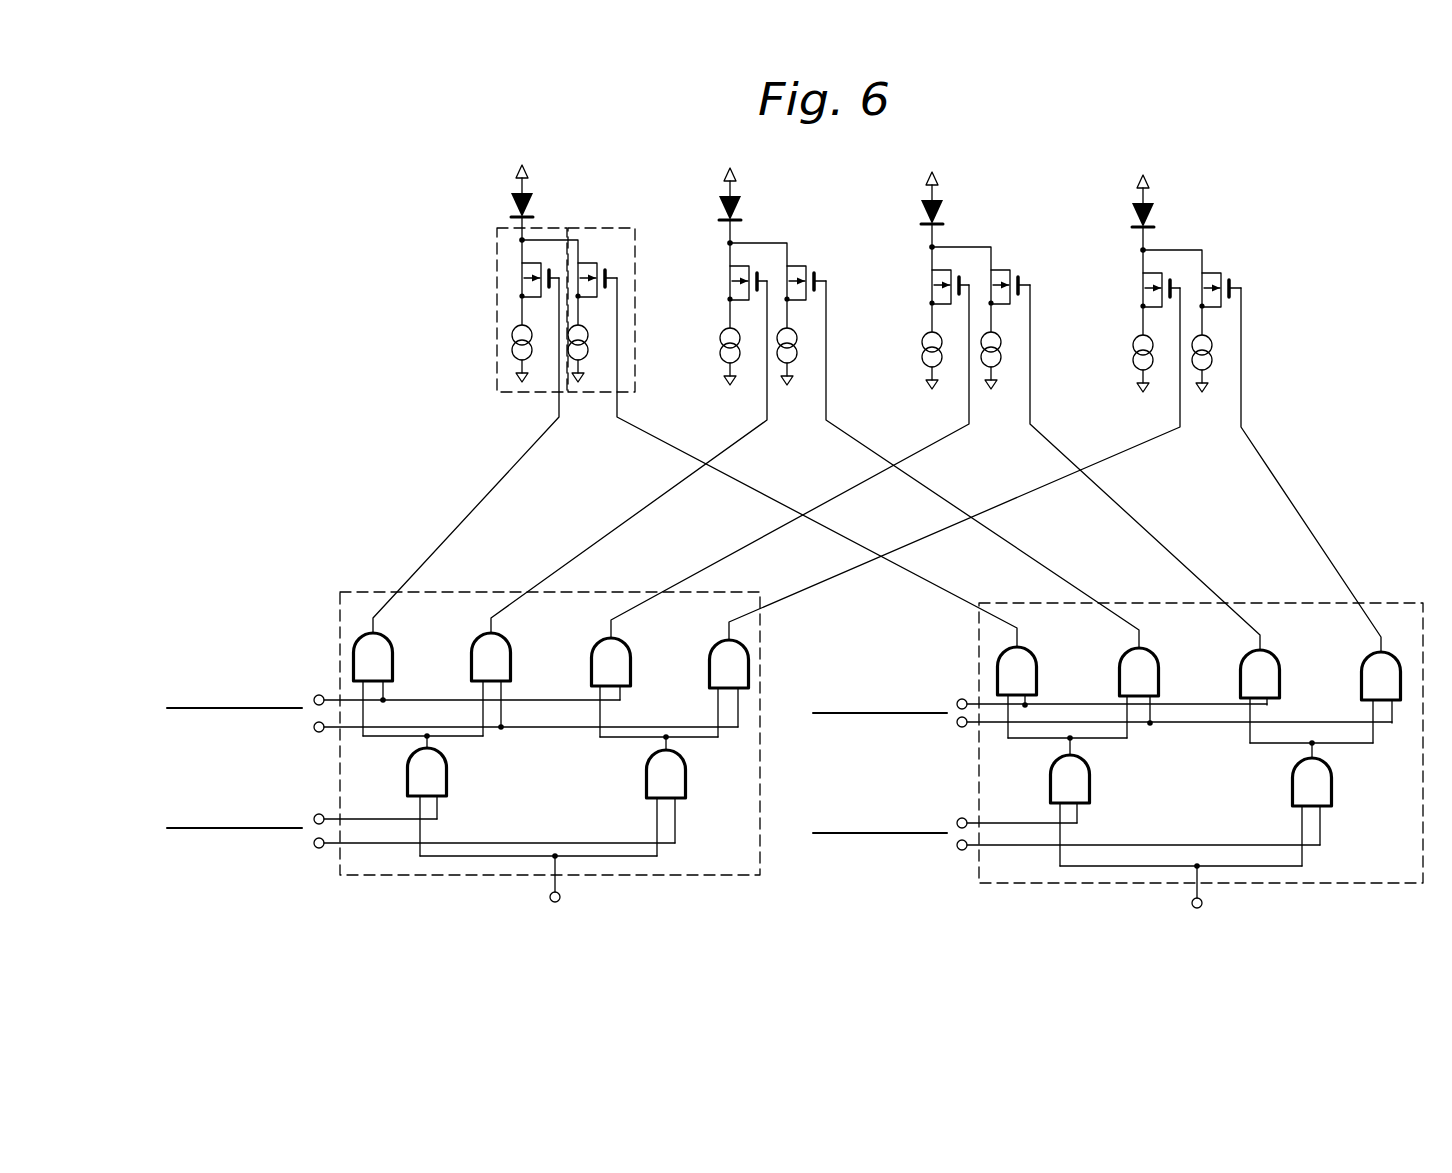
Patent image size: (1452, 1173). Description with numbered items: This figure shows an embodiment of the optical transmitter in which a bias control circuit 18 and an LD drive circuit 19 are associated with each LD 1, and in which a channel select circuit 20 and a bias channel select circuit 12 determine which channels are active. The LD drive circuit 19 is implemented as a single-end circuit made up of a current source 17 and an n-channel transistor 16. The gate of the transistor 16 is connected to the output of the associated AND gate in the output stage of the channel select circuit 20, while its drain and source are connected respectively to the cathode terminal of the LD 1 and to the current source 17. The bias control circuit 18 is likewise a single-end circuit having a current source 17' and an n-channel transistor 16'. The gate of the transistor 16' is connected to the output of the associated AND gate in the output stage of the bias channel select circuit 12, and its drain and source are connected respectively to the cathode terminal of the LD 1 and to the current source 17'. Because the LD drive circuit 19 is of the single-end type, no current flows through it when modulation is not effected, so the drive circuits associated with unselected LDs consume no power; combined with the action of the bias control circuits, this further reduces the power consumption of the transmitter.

The LD 1 is at (514, 206).
The n-channel transistor 16 is at (504, 272).
The n-channel transistor 16' is at (627, 280).
The current source 17 is at (493, 353).
The current source 17' is at (623, 353).
The bias control circuit 18 is at (623, 287).
The LD drive circuit 19 is at (511, 282).
The channel select circuit 20 is at (733, 876).
The bias channel select circuit 12 is at (1379, 884).